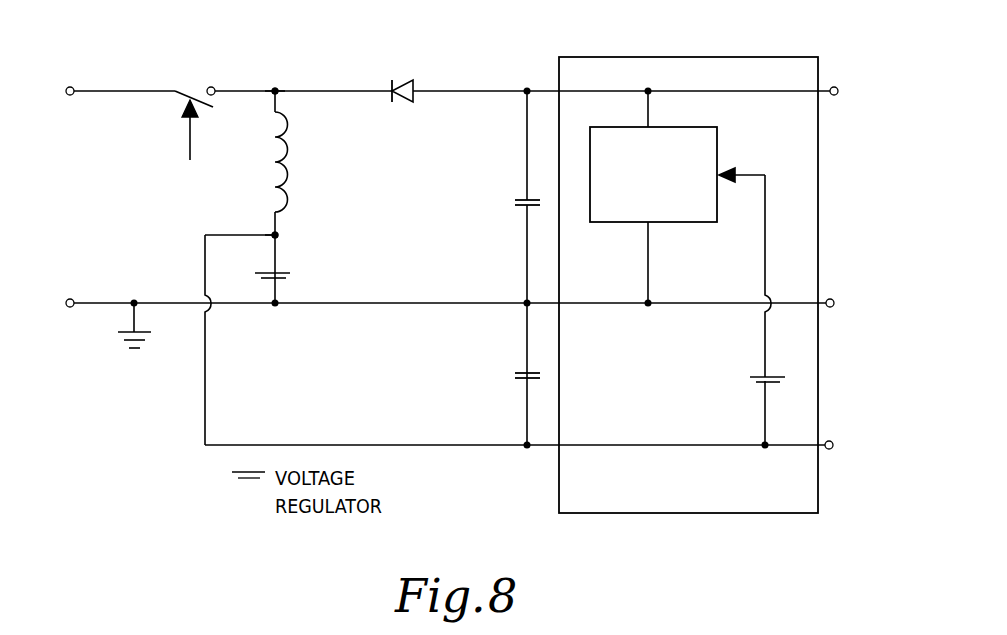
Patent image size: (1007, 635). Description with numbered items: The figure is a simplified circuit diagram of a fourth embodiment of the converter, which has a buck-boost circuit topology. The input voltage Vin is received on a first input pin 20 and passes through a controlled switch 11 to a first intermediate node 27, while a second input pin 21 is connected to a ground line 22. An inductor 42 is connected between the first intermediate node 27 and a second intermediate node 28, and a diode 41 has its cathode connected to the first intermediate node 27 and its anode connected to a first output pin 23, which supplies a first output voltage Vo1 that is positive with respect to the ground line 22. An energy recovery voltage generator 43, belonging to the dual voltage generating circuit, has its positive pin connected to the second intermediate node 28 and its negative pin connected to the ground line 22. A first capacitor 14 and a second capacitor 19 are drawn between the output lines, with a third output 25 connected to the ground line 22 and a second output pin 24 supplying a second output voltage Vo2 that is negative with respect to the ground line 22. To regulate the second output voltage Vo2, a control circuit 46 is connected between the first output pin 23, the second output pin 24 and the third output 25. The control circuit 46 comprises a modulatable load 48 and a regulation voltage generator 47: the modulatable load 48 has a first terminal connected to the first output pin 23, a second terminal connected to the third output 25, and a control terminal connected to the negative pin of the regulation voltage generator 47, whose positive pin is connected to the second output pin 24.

The controlled switch 11 is at (197, 100).
The first capacitor 14 is at (520, 201).
The second capacitor 19 is at (515, 374).
The first input pin 20 is at (68, 96).
The second input pin 21 is at (70, 298).
The ground line 22 is at (120, 341).
The first output pin 23 is at (834, 97).
The second output pin 24 is at (828, 440).
The third output 25 is at (835, 300).
The first intermediate node 27 is at (276, 88).
The second intermediate node 28 is at (272, 232).
The diode 41 is at (410, 80).
The inductor 42 is at (288, 154).
The energy recovery voltage generator 43 is at (287, 280).
The control circuit 46 is at (793, 252).
The regulation voltage generator 47 is at (750, 378).
The modulatable load 48 is at (688, 197).